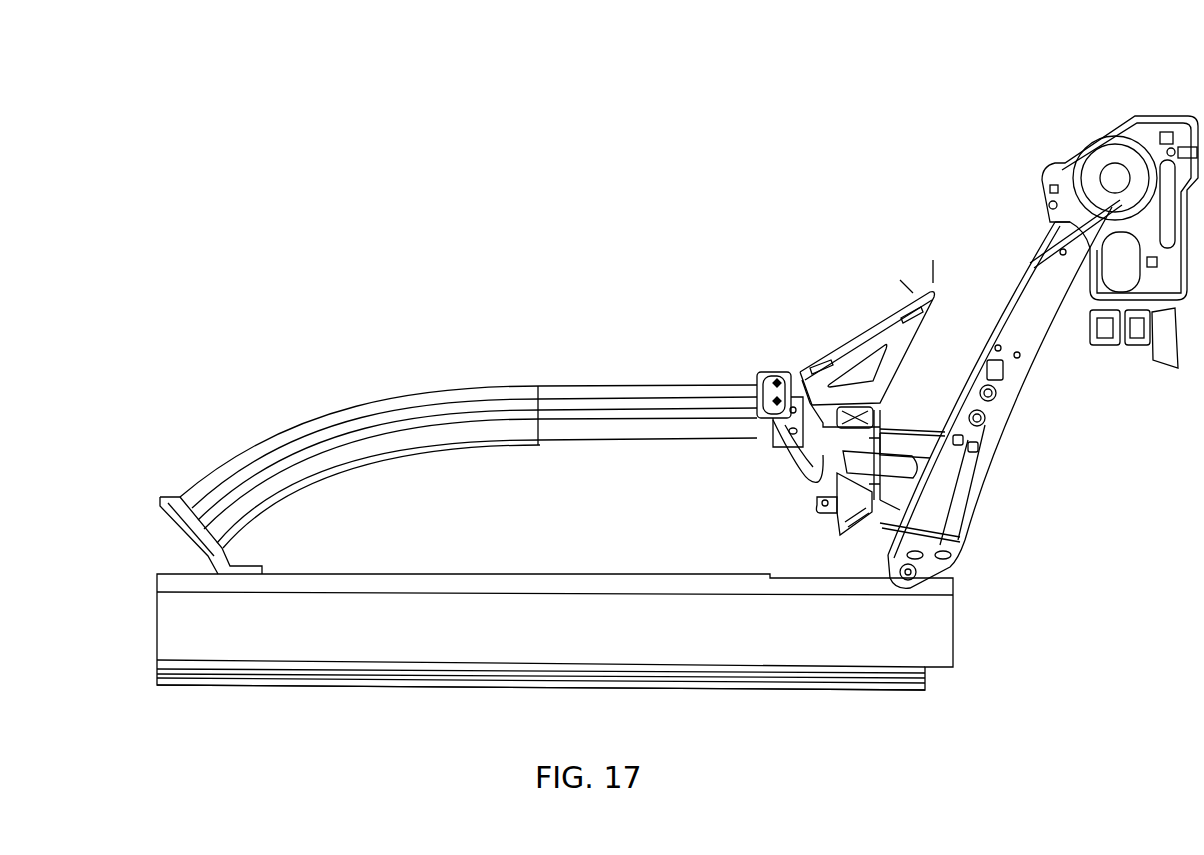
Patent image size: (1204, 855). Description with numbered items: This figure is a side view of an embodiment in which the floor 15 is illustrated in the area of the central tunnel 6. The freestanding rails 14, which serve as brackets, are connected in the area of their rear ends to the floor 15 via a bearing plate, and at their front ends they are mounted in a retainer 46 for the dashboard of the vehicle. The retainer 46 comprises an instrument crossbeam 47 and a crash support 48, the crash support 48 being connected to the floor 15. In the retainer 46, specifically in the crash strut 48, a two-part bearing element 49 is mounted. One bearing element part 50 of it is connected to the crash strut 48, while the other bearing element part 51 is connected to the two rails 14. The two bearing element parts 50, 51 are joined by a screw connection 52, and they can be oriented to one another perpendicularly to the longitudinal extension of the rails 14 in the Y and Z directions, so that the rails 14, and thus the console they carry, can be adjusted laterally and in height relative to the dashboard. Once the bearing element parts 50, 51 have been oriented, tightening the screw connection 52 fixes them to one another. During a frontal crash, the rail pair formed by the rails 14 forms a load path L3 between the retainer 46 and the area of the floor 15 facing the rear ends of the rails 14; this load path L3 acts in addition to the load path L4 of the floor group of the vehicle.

The rails 14 is at (577, 388).
The floor 15 is at (513, 578).
The central tunnel 6 is at (1000, 650).
The retainer 46 is at (1013, 172).
The instrument crossbeam 47 is at (1138, 130).
The crash support 48 is at (1028, 332).
The two-part bearing element 49 is at (921, 395).
The bearing element part 50 is at (957, 457).
The bearing element part 51 is at (802, 473).
The screw connection 52 is at (820, 510).
The load path L3 is at (620, 369).
The load path L4 is at (618, 634).